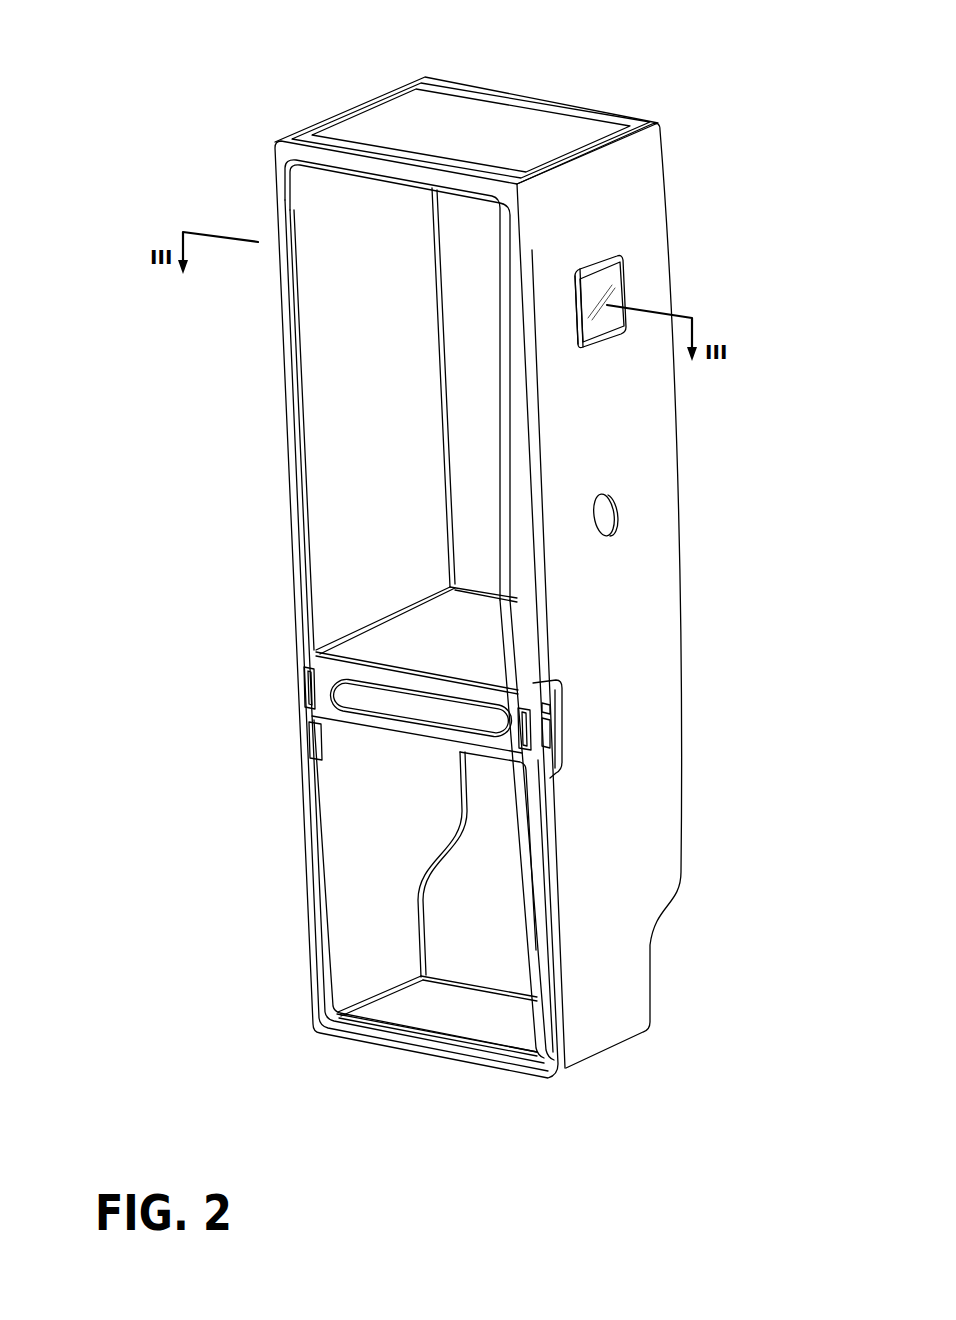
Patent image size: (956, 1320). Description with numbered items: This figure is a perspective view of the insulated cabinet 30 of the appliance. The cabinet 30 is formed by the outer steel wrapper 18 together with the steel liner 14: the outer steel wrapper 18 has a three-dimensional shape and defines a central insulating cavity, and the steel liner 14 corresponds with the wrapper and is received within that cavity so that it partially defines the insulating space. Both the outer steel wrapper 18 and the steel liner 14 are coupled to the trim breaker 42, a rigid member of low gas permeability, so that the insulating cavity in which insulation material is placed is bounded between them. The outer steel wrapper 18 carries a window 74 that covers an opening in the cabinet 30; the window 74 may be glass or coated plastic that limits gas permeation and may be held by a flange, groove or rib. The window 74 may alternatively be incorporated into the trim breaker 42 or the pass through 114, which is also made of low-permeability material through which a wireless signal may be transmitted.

The insulated cabinet 30 is at (599, 83).
The steel liner 14 is at (363, 337).
The outer steel wrapper 18 is at (627, 192).
The window 74 is at (613, 268).
The pass through 114 is at (617, 502).
The trim breaker 42 is at (325, 668).